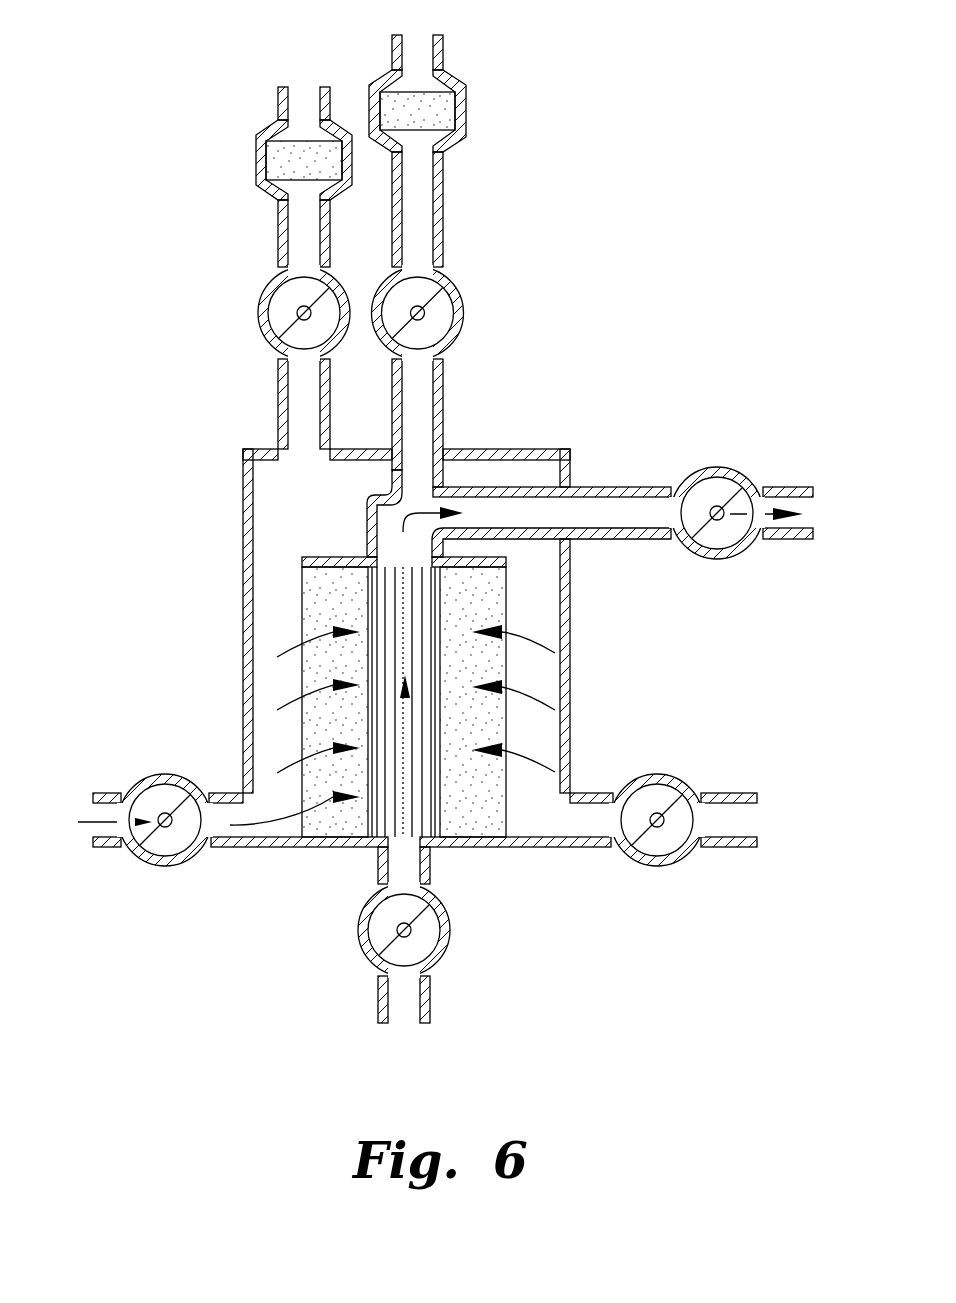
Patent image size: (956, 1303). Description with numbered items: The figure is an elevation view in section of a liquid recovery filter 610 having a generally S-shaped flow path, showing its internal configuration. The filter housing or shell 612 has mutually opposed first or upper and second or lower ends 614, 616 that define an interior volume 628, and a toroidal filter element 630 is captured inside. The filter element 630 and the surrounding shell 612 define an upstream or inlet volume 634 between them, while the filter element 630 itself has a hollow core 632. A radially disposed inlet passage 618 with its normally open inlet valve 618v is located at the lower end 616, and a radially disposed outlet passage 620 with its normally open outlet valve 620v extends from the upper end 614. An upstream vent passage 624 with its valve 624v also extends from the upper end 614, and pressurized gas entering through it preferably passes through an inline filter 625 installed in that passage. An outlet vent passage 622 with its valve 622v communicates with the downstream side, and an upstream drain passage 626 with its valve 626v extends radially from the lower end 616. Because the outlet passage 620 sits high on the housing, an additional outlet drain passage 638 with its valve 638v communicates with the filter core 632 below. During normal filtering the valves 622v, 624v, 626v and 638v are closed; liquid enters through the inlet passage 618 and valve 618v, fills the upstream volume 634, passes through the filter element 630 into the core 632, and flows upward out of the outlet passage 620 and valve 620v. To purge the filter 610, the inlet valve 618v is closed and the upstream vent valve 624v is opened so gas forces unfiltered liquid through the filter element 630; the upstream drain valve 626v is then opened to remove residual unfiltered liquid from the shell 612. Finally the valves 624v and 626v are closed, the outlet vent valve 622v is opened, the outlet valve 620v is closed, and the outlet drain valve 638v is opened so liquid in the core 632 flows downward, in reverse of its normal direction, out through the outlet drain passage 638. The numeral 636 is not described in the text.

The liquid recovery filter 610 is at (163, 903).
The filter housing or shell 612 is at (243, 573).
The upper end 614 is at (512, 448).
The lower end 616 is at (300, 848).
The inlet passage 618 is at (222, 793).
The inlet valve 618v is at (152, 773).
The outlet passage 620 is at (628, 488).
The outlet valve 620v is at (720, 468).
The outlet vent passage 622 is at (443, 388).
The outlet vent passage valve 622v is at (462, 298).
The upstream vent passage 624 is at (280, 397).
The upstream vent passage valve 624v is at (260, 300).
The inline filter 625 is at (255, 163).
The upstream drain passage 626 is at (593, 792).
The upstream drain passage valve 626v is at (690, 778).
The interior volume 628 is at (270, 517).
The filter element 630 is at (300, 627).
The filter core 632 is at (413, 593).
The upstream volume 634 is at (548, 617).
The backwash filter 636 is at (369, 110).
The outlet drain passage 638 is at (430, 862).
The outlet drain passage valve 638v is at (450, 927).